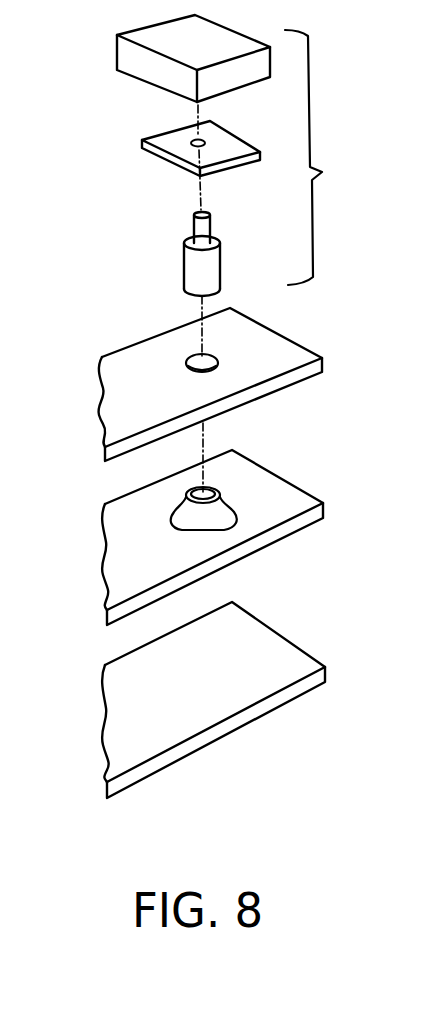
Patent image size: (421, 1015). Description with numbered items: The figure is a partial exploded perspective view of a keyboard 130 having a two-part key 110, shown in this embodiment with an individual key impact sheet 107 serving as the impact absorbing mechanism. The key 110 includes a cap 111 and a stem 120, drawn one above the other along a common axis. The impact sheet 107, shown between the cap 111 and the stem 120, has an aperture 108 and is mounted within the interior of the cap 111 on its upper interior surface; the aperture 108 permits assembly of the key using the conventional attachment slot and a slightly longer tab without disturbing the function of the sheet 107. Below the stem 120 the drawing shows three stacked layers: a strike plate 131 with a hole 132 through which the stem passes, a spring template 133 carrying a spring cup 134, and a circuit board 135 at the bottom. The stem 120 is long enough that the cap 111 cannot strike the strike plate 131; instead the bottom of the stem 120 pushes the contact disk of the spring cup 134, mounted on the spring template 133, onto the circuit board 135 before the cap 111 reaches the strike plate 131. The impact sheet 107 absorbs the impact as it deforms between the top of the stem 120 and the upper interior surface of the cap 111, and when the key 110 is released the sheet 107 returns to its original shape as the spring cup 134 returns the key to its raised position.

The key impact sheet 107 is at (173, 162).
The aperture 108 is at (194, 143).
The key 110 is at (326, 157).
The cap 111 is at (138, 60).
The stem 120 is at (197, 267).
The keyboard 130 is at (247, 733).
The strike plate 131 is at (295, 343).
The hole in upper layer 132 is at (188, 367).
The spring template 133 is at (293, 483).
The spring cup 134 is at (187, 515).
The circuit board 135 is at (292, 642).